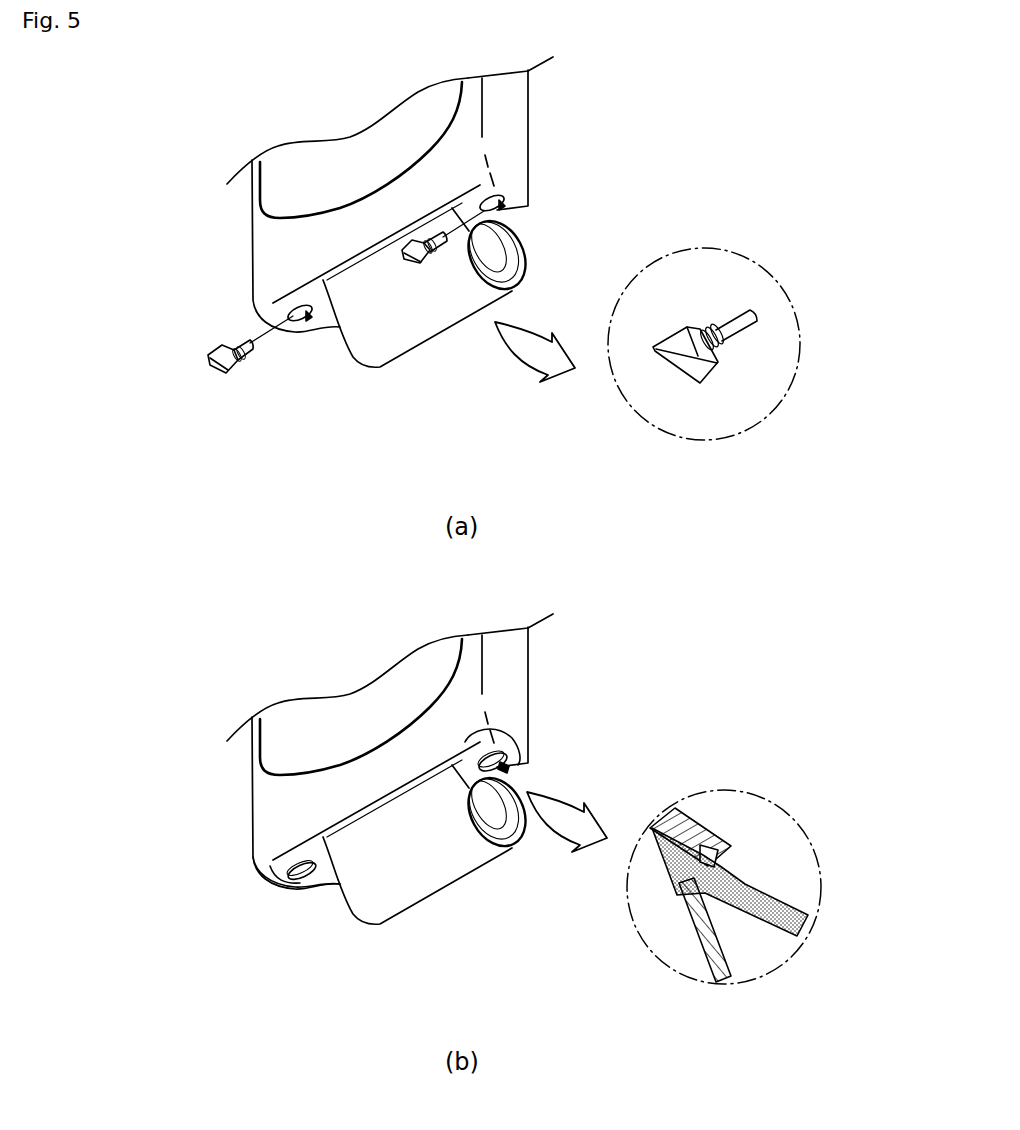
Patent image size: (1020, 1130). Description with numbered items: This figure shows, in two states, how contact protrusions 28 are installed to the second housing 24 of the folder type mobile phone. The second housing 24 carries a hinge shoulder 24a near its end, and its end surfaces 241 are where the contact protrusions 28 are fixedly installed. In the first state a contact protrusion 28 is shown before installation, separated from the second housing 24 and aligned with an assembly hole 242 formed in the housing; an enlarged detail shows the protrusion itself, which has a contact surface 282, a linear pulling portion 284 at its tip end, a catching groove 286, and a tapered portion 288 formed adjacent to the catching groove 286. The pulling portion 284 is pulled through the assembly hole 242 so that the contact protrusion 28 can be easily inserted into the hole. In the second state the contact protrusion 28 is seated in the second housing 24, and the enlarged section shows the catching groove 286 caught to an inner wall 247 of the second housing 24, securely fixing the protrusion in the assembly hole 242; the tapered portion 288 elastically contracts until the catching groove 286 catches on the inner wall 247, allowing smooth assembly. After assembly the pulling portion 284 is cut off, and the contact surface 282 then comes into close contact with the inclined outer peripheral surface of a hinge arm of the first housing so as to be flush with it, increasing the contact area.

The second housing 24 is at (520, 113).
The hinge shoulder 24a is at (348, 360).
The end surface 241 is at (490, 181).
The assembly hole 242 is at (520, 213).
The inner wall 247 is at (732, 848).
The contact protrusion 28 is at (176, 354).
The contact surface 282 is at (218, 364).
The pulling portion 284 is at (238, 345).
The catching groove 286 is at (718, 353).
The tapered portion 288 is at (723, 341).